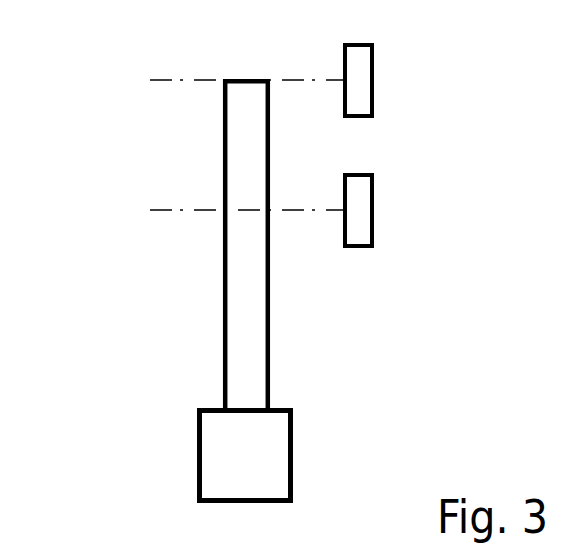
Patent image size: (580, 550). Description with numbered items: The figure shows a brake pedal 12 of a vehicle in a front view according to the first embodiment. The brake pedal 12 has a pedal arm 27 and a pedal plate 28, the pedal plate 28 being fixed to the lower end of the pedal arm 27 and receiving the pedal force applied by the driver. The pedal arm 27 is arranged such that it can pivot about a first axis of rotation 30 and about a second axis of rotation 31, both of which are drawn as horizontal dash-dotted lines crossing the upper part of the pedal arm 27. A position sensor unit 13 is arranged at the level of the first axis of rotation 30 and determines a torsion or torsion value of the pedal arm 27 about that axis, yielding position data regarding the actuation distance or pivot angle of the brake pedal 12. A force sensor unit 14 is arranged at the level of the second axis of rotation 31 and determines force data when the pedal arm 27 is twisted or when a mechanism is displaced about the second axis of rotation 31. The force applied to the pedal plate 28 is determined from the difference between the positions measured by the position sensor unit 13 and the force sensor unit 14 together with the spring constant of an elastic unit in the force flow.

The brake pedal 12 is at (118, 302).
The position sensor unit 13 is at (391, 52).
The force sensor unit 14 is at (391, 182).
The pedal arm 27 is at (222, 347).
The pedal plate 28 is at (197, 468).
The first axis of rotation 30 is at (163, 80).
The second axis of rotation 31 is at (162, 210).